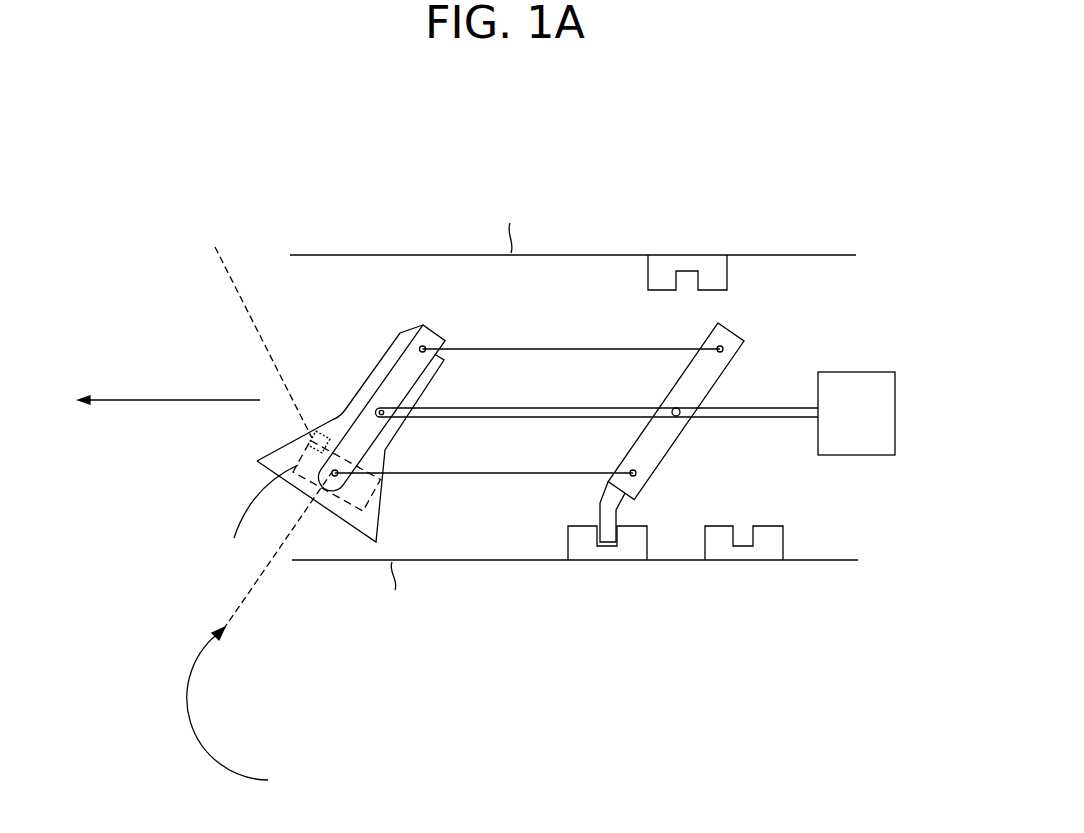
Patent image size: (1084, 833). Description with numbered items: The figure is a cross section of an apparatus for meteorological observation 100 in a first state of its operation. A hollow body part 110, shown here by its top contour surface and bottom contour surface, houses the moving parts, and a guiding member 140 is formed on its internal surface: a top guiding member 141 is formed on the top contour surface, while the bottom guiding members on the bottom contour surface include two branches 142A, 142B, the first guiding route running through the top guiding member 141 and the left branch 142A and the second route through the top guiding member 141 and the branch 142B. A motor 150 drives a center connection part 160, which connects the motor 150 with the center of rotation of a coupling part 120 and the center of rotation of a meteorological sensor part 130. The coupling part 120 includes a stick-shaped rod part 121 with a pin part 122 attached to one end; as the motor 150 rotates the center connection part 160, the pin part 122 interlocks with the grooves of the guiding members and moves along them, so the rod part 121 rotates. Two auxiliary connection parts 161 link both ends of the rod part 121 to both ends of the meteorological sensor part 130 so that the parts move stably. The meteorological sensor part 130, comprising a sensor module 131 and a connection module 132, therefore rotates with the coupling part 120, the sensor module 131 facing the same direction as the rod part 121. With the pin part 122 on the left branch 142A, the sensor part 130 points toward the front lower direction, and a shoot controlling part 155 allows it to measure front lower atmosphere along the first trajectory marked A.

The apparatus for meteorological observation 100 is at (287, 152).
The body part 110 is at (349, 253).
The coupling part 120 is at (754, 383).
The rod part 121 is at (665, 453).
The pin part 122 is at (600, 505).
The meteorological sensor part 130 is at (326, 436).
The sensor module 131 is at (306, 444).
The connection module 132 is at (432, 338).
The guiding member 140 is at (698, 435).
The top guiding member 141 is at (680, 263).
The first branch of bottom guiding members 142A is at (622, 560).
The second branch of bottom guiding members 142B is at (727, 556).
The motor 150 is at (873, 372).
The shoot controlling part 155 is at (253, 329).
The center connection part 160 is at (562, 408).
The auxiliary connection parts 161 is at (565, 348).